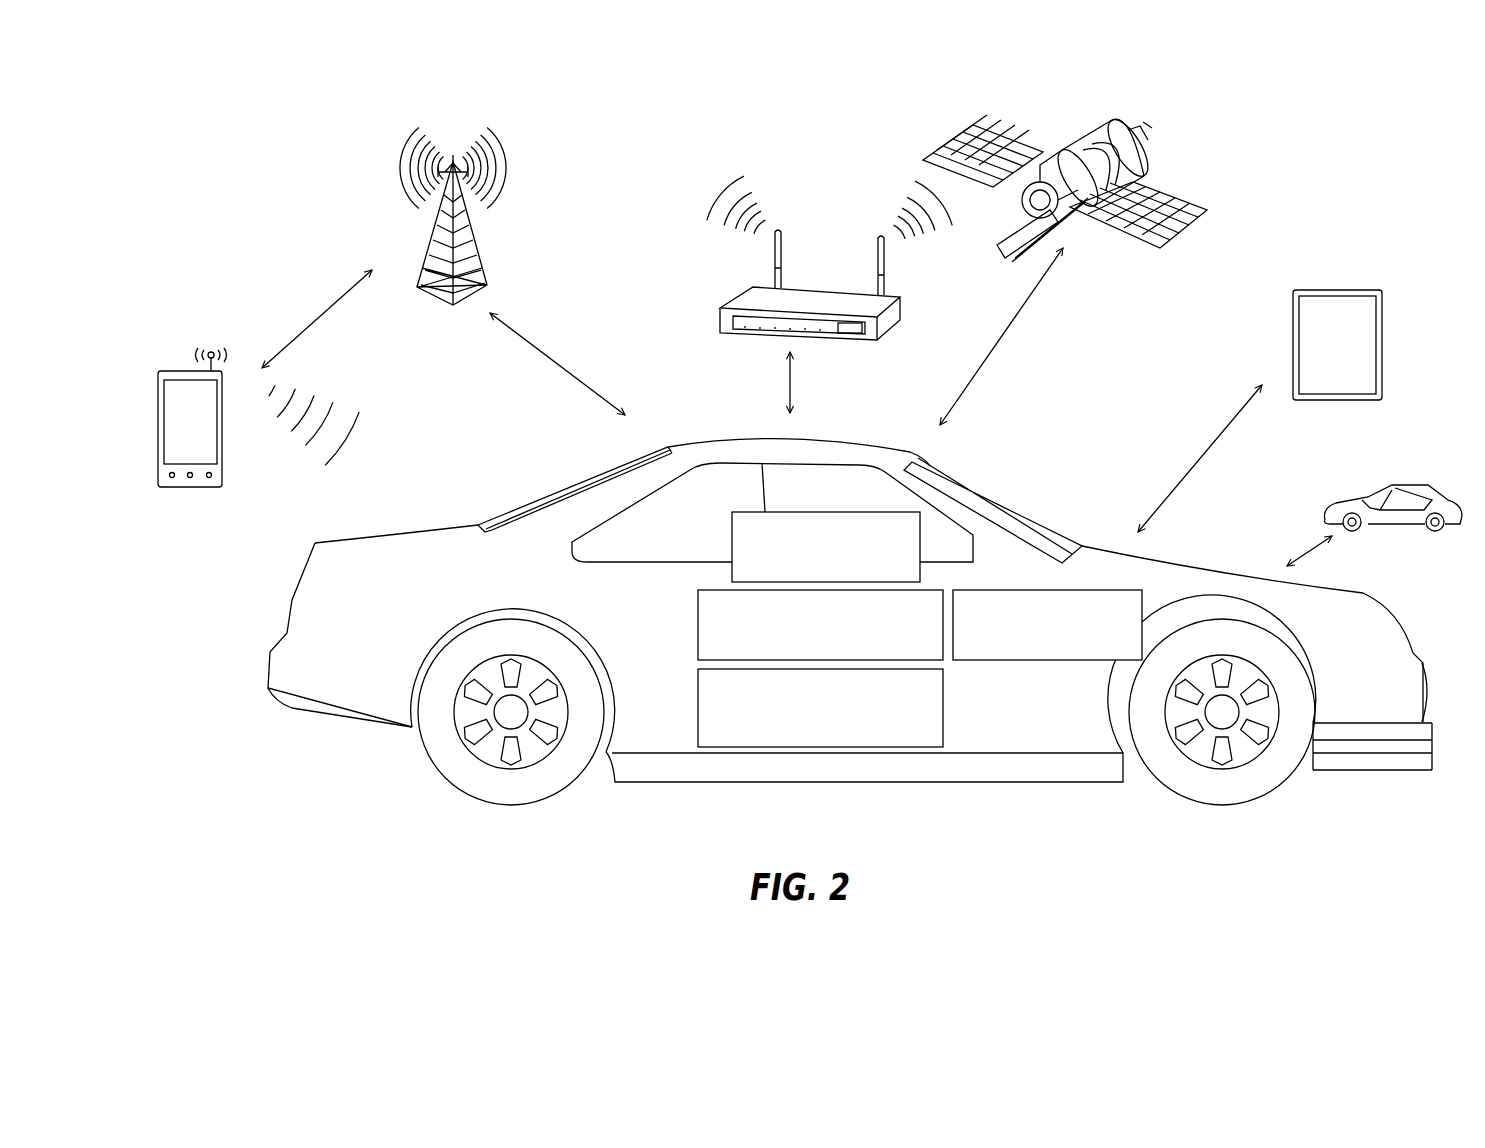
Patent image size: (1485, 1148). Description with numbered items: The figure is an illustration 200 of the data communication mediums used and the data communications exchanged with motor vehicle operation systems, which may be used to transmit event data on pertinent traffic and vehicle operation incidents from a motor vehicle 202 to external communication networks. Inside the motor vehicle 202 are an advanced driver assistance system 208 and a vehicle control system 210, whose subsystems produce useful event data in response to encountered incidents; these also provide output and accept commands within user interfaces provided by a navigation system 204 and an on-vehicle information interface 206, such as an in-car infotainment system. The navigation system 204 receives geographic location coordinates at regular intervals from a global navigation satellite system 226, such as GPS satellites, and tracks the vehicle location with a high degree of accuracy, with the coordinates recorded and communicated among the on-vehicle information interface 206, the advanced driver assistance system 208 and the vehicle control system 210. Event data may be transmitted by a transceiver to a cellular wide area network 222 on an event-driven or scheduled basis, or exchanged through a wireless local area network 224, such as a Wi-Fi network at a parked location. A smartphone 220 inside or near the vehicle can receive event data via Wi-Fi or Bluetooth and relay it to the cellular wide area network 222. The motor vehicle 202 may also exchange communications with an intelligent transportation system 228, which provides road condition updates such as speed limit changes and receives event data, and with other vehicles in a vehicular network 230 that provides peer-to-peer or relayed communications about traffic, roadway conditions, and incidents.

The illustration 200 is at (260, 128).
The motor vehicle 202 is at (1370, 600).
The navigation system 204 is at (732, 528).
The on-vehicle information interface 206 is at (698, 608).
The advanced driver assistance system 208 is at (698, 682).
The vehicle control system 210 is at (1078, 590).
The smartphone 220 is at (222, 450).
The cellular wide area network 222 is at (428, 247).
The wireless local area network 224 is at (720, 318).
The global navigation satellite system 226 is at (1095, 137).
The intelligent transportation system 228 is at (1292, 320).
The vehicular network 230 is at (1325, 508).